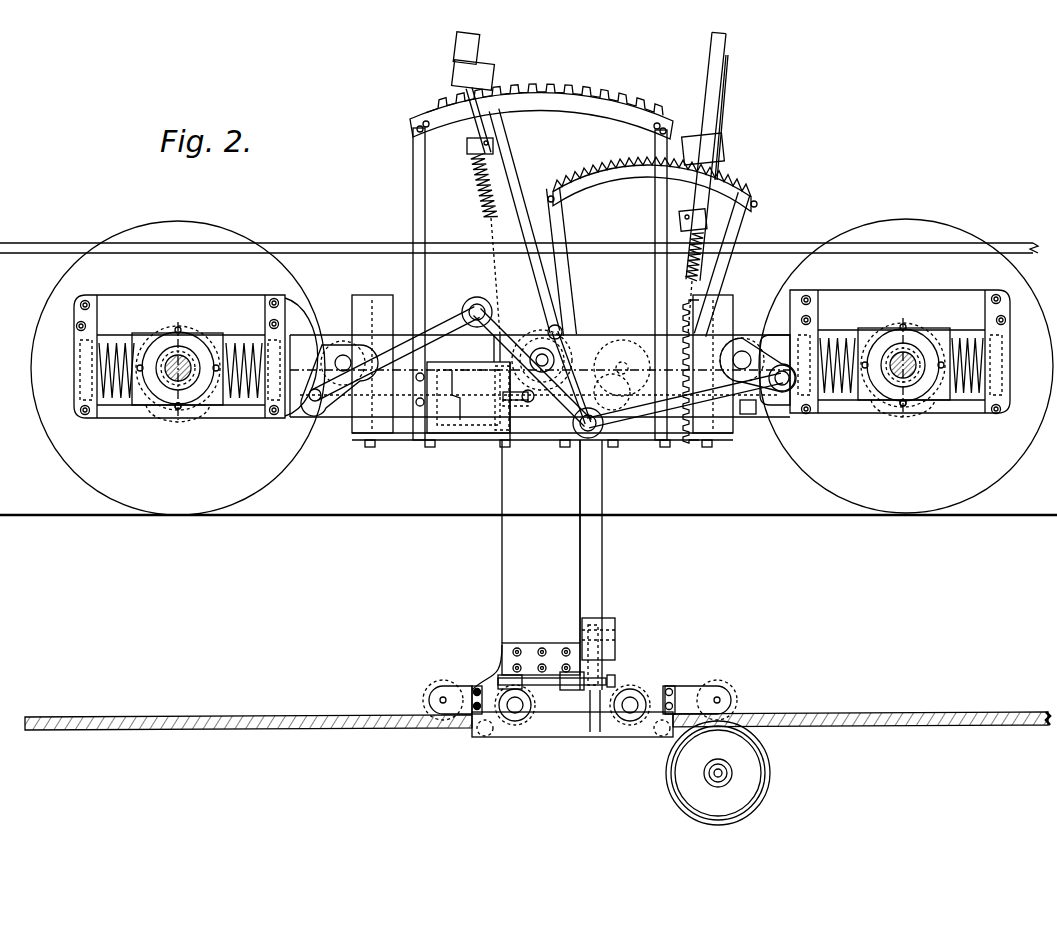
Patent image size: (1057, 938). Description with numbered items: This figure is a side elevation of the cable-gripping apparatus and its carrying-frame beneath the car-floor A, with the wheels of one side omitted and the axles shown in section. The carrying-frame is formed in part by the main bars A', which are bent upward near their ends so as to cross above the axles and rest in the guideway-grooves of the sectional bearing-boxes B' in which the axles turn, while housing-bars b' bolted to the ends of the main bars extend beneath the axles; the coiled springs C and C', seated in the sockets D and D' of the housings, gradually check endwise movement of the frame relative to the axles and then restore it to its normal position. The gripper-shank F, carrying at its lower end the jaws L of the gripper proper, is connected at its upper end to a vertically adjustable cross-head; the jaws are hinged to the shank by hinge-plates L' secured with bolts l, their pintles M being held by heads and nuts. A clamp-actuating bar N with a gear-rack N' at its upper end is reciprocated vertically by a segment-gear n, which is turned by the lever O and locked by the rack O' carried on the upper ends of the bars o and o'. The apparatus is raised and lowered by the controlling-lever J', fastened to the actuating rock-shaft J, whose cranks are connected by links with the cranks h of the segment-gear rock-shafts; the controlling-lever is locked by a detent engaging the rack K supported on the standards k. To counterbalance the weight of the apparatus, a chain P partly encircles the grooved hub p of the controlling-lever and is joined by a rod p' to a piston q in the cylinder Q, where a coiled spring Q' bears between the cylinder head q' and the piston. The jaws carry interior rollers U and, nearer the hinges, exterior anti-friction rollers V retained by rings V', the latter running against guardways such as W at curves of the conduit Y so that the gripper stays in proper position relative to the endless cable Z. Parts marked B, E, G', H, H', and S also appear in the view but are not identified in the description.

The car-floor A is at (519, 252).
The main bars A' is at (541, 355).
The axle B is at (540, 369).
The sectional bearing-boxes B' is at (541, 358).
The coiled spring C is at (540, 376).
The coiled spring C' is at (541, 388).
The socket or seat D is at (641, 354).
The socket D' is at (72, 356).
The bearing cap E is at (192, 408).
The housing-bars b' is at (540, 421).
The gripper-shank F is at (526, 565).
The cross beam G' is at (540, 380).
The housing block H is at (372, 355).
The housing block H' is at (713, 364).
The crank h is at (548, 361).
The actuating rock-shaft J is at (536, 359).
The controlling-lever J' is at (524, 221).
The detent-rack K is at (554, 94).
The standards k is at (413, 216).
The jaws L is at (572, 723).
The hinge-plates L' is at (541, 646).
The bolts l is at (541, 660).
The pintles M is at (612, 682).
The clamp-actuating bar N is at (600, 586).
The gear-rack N' is at (622, 365).
The segment-gear n is at (646, 371).
The lever O is at (701, 183).
The rack O' is at (652, 180).
The bar o is at (564, 261).
The bar o' is at (724, 264).
The chain P is at (575, 343).
The grooved hub p is at (518, 385).
The piston-rod p' is at (515, 407).
The cylinder Q is at (468, 413).
The coiled spring Q' is at (496, 413).
The piston q is at (453, 395).
The cylinder head q' is at (516, 349).
The slide block S is at (604, 651).
The interior rollers U is at (485, 737).
The exterior anti-friction rollers V is at (523, 694).
The retaining-rings V' is at (625, 705).
The guardway W is at (718, 773).
The conduit Y is at (870, 603).
The endless cable Z is at (310, 714).